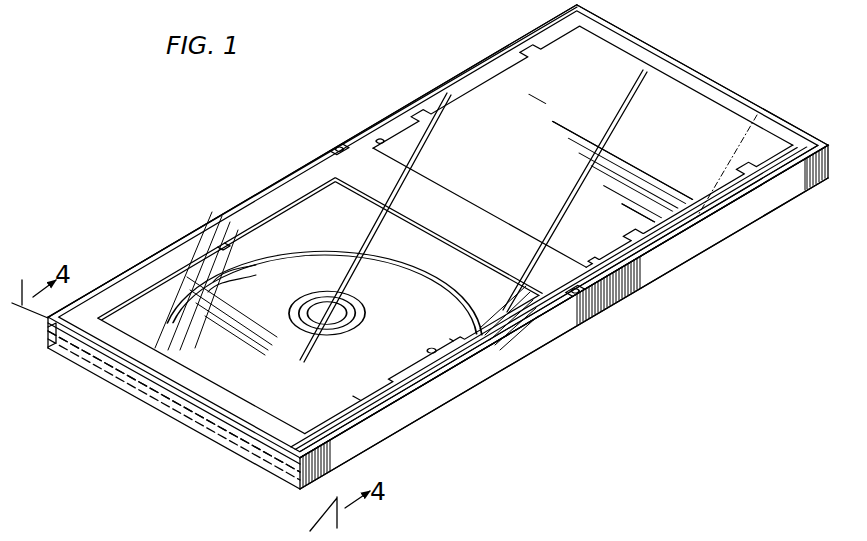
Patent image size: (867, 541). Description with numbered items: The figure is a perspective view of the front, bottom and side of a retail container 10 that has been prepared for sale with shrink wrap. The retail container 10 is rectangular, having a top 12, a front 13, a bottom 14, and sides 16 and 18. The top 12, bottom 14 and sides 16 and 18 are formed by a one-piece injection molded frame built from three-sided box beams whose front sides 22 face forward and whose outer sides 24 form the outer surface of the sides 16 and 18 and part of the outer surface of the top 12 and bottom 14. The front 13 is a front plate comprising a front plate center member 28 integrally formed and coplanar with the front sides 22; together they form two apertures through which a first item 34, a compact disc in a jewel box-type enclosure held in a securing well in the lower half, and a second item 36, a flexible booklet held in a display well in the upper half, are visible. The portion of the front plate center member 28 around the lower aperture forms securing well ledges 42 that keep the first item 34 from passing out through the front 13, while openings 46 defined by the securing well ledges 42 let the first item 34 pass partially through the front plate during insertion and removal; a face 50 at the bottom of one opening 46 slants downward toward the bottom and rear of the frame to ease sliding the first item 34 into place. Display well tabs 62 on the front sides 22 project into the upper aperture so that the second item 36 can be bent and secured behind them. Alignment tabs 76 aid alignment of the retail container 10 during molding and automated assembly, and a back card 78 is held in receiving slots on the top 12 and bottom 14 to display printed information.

The retail container 10 is at (492, 405).
The top 12 is at (699, 68).
The front 13 is at (508, 250).
The bottom 14 is at (187, 426).
The side 16 is at (608, 304).
The side 18 is at (309, 156).
The front sides 22 is at (758, 117).
The outer sides 24 is at (645, 268).
The front plate center member 28 is at (380, 175).
The first item 34 is at (162, 316).
The second item 36 is at (487, 125).
The securing well ledges 42 is at (302, 184).
The openings 46 is at (220, 247).
The face 50 is at (213, 288).
The display well tabs 62 is at (538, 55).
The alignment tabs 76 is at (336, 146).
The back card 78 is at (103, 367).